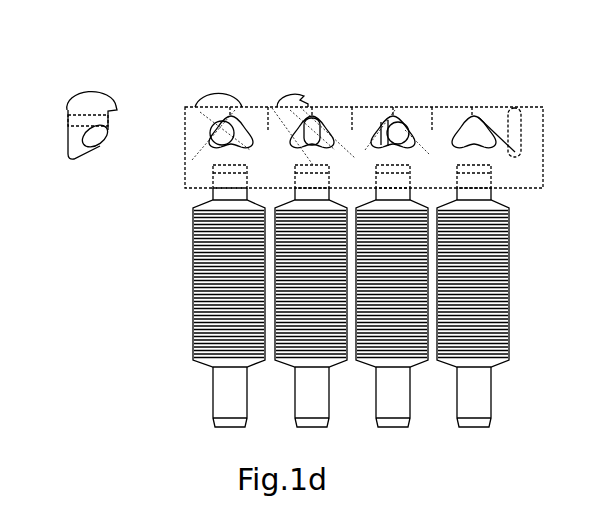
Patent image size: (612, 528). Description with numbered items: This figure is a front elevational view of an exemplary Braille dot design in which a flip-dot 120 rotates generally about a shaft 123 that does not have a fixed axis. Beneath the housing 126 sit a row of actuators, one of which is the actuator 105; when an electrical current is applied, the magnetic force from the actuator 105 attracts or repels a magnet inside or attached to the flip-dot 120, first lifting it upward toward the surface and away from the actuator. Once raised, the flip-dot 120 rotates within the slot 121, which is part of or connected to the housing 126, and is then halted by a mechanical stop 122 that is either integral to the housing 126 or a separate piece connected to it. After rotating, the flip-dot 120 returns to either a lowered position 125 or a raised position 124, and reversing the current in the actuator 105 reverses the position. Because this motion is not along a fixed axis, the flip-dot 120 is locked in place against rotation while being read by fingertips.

The actuator 105 is at (212, 403).
The flip-dot 120 is at (292, 95).
The slot 121 is at (466, 118).
The mechanical stop 122 is at (496, 117).
The shaft 123 is at (316, 113).
The raised position 124 is at (212, 92).
The lowered position 125 is at (371, 117).
The housing 126 is at (519, 107).